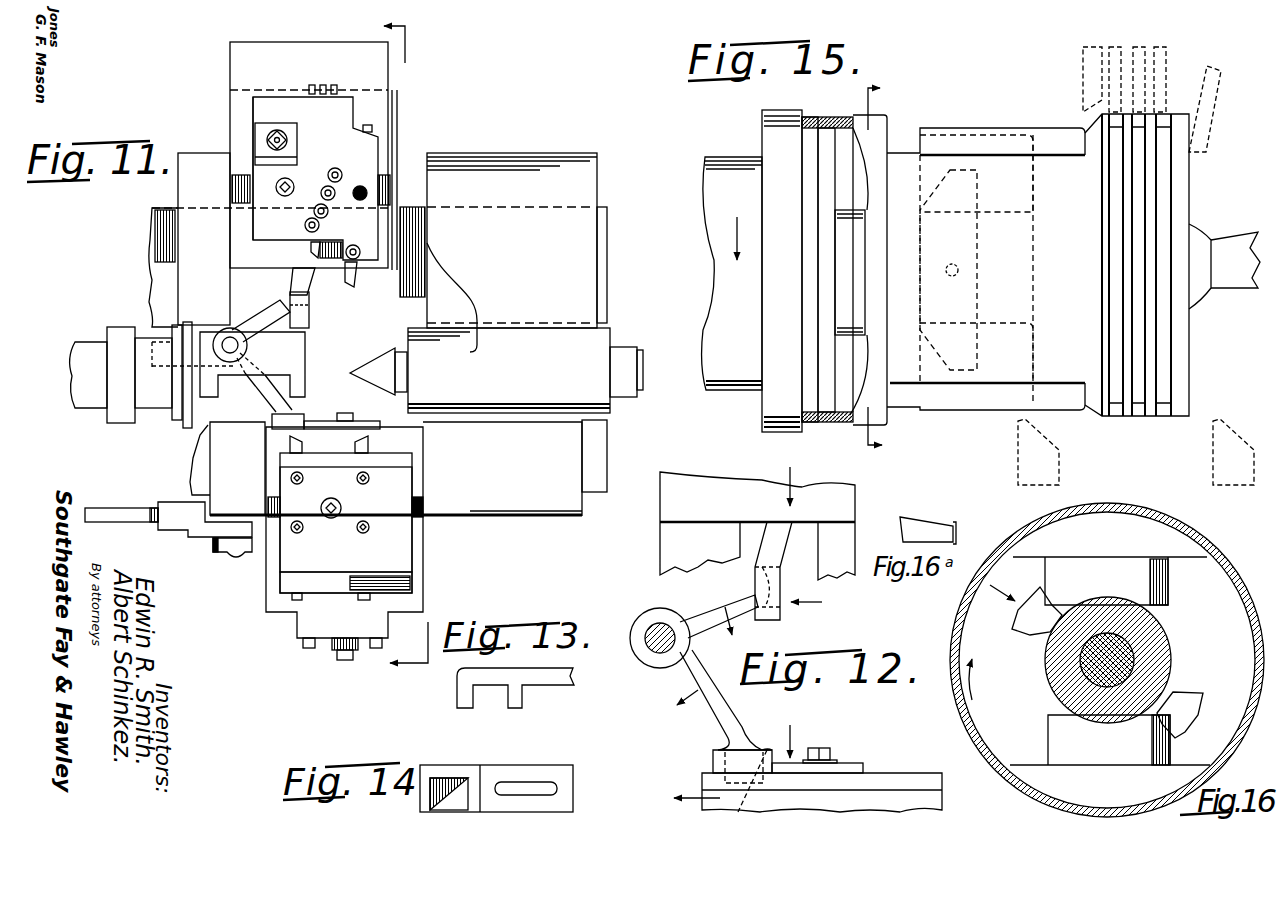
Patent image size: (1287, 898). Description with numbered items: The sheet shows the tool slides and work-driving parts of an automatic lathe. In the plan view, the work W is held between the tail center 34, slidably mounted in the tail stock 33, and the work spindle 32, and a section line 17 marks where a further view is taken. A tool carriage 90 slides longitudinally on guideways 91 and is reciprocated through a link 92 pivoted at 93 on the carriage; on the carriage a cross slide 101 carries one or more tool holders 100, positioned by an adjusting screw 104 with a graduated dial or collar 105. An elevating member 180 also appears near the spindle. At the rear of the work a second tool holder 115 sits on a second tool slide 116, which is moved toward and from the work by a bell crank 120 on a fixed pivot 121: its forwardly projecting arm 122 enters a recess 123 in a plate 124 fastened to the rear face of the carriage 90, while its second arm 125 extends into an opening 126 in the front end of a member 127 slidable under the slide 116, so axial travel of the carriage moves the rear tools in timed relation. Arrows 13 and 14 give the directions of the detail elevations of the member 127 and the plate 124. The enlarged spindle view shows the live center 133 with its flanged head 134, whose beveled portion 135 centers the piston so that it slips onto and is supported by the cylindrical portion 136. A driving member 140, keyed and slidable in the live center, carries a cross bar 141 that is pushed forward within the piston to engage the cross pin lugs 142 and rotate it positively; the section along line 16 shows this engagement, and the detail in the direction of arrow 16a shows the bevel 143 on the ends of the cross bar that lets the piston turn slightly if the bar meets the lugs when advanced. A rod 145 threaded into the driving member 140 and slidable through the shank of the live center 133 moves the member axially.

In FIG. 11, the section line 17 is at (407, 345).
In FIG. 11, the second tool slide 116 is at (378, 107).
In FIG. 12, the second tool slide 116 is at (722, 480).
In FIG. 11, the second tool holder 115 is at (365, 155).
In FIG. 11, the work spindle 32 is at (90, 342).
In FIG. 11, the tail stock 33 is at (612, 413).
In FIG. 11, the tail center 34 is at (380, 386).
In FIG. 15, the tail center 34 is at (1240, 250).
In FIG. 11, the tool carriage 90 is at (523, 511).
In FIG. 12, the tool carriage 90 is at (822, 782).
In FIG. 11, the guideways 91 is at (607, 448).
In FIG. 11, the link 92 is at (123, 512).
In FIG. 11, the pivot 93 is at (240, 558).
In FIG. 11, the tool holders 100 is at (403, 553).
In FIG. 11, the cross slide 101 is at (420, 583).
In FIG. 11, the adjusting screw 104 is at (340, 660).
In FIG. 11, the graduated dial or collar 105 is at (306, 648).
In FIG. 12, the bell crank 120 is at (658, 620).
In FIG. 12, the fixed pivot 121 is at (655, 657).
In FIG. 11, the forwardly projecting arm 122 is at (268, 398).
In FIG. 12, the forwardly projecting arm 122 is at (715, 712).
In FIG. 12, the recess 123 is at (746, 790).
In FIG. 14, the recess 123 is at (453, 800).
In FIG. 11, the plate 124 is at (306, 422).
In FIG. 12, the plate 124 is at (863, 765).
In FIG. 14, the plate 124 is at (513, 768).
In FIG. 11, the second arm 125 is at (275, 310).
In FIG. 12, the second arm 125 is at (757, 580).
In FIG. 13, the opening 126 is at (500, 690).
In FIG. 11, the member 127 is at (305, 313).
In FIG. 12, the member 127 is at (778, 557).
In FIG. 13, the member 127 is at (575, 680).
In FIG. 11, the elevating member 180 is at (305, 355).
In FIG. 11, the live center 133 is at (155, 410).
In FIG. 15, the live center 133 is at (722, 152).
In FIG. 11, the flanged head 134 is at (176, 420).
In FIG. 15, the flanged head 134 is at (782, 104).
In FIG. 11, the beveled portion 135 is at (189, 332).
In FIG. 15, the beveled portion 135 is at (823, 127).
In FIG. 15, the cylindrical portion 136 is at (797, 142).
In FIG. 15, the driving member 140 is at (855, 212).
In FIG. 16, the driving member 140 is at (1048, 688).
In FIG. 15, the cross bar 141 is at (968, 303).
In FIG. 16A, the cross bar 141 is at (956, 533).
In FIG. 16, the cross bar 141 is at (1030, 622).
In FIG. 15, the cross pin lugs 142 is at (1020, 197).
In FIG. 16, the cross pin lugs 142 is at (1168, 593).
In FIG. 16A, the bevel 143 is at (942, 508).
In FIG. 16, the rod 145 is at (1145, 640).
In FIG. 15, the work W is at (1024, 99).
In FIG. 16, the work W is at (1242, 519).
In FIG. 12, the arrow 13 is at (809, 591).
In FIG. 12, the arrow 14 is at (804, 739).
In FIG. 15, the section line 16- 16 is at (868, 261).
In FIG. 16, the arrow 16a is at (1008, 582).